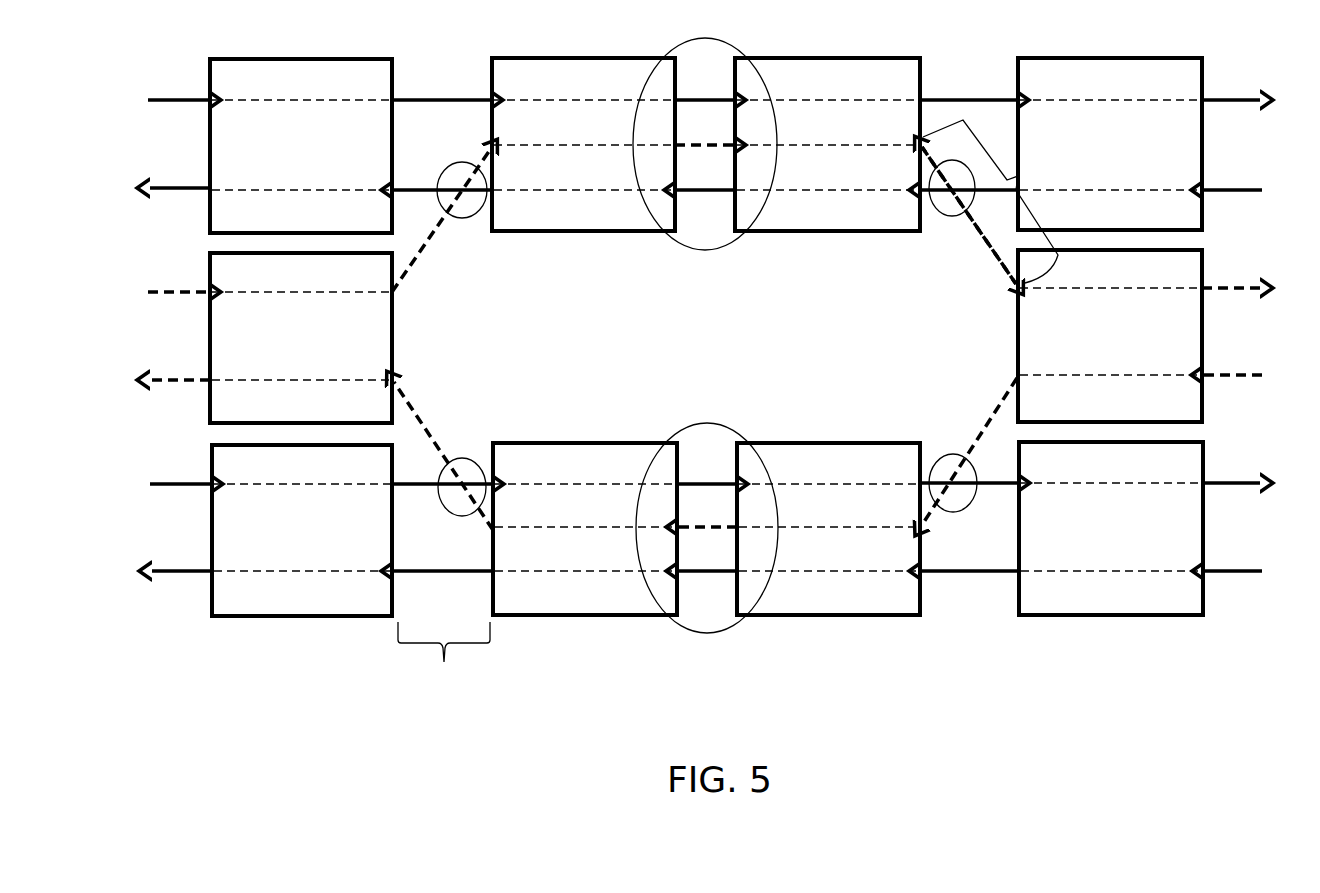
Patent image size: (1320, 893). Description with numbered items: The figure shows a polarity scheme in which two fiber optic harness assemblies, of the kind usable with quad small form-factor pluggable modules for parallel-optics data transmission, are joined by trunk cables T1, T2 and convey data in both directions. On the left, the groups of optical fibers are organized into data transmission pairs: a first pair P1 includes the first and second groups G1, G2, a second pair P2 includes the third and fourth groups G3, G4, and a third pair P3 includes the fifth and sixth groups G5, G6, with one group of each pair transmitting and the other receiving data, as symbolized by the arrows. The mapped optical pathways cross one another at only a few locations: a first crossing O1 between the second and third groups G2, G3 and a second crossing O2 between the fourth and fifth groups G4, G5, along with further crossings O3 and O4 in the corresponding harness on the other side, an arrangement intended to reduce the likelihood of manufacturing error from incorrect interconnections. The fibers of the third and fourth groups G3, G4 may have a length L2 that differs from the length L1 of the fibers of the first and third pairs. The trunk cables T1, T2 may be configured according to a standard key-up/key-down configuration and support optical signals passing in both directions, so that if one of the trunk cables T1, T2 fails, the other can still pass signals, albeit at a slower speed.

The first pair P1 is at (296, 145).
The second pair P2 is at (285, 337).
The third pair P3 is at (280, 528).
The first group of optical fibers G1 is at (310, 188).
The second group of optical fibers G2 is at (301, 173).
The third group of optical fibers G3 is at (300, 380).
The fourth group of optical fibers G4 is at (301, 361).
The fifth group of optical fibers G5 is at (294, 572).
The sixth group of optical fibers G6 is at (302, 558).
The first crossing O1 is at (473, 217).
The second crossing O2 is at (944, 216).
The third crossing O3 is at (470, 457).
The fourth crossing O4 is at (948, 453).
The first trunk cable T1 is at (728, 245).
The second trunk cable T2 is at (733, 628).
The fiber length of first and third pairs L1 is at (444, 669).
The fiber length of second pair L2 is at (1020, 178).